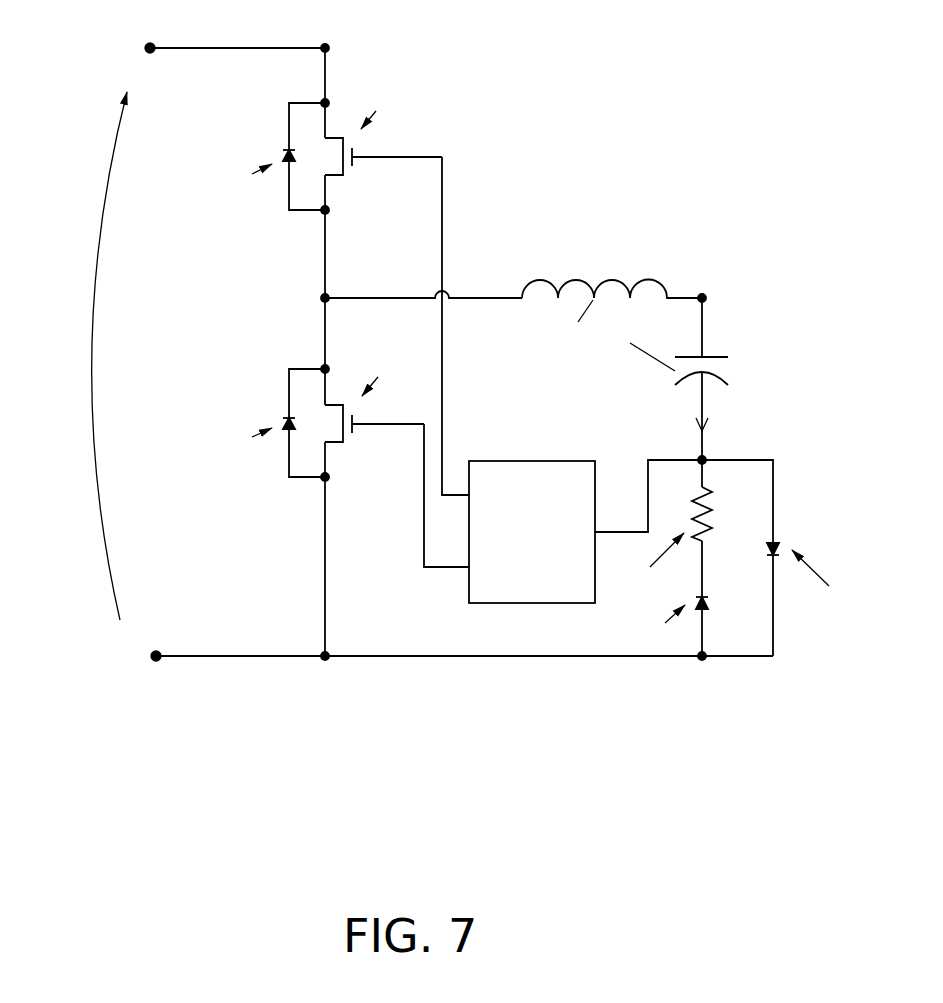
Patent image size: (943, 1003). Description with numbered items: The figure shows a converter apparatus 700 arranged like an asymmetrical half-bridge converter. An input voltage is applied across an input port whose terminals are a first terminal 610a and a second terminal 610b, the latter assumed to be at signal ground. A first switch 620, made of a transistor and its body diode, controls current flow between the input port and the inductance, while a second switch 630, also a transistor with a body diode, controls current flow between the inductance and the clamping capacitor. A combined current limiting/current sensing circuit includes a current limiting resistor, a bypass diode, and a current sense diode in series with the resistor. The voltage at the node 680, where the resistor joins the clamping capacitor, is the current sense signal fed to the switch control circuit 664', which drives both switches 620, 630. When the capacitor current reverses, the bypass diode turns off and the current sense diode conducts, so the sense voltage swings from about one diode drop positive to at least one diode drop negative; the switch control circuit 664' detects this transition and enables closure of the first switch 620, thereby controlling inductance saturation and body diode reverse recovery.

The converter apparatus 700 is at (693, 193).
The input port terminal 610a is at (146, 46).
The second terminal of the input port 610b is at (152, 661).
The first switch 620 is at (252, 130).
The second switch 630 is at (253, 486).
The switch control circuit 664' is at (539, 497).
The node 680 is at (716, 445).